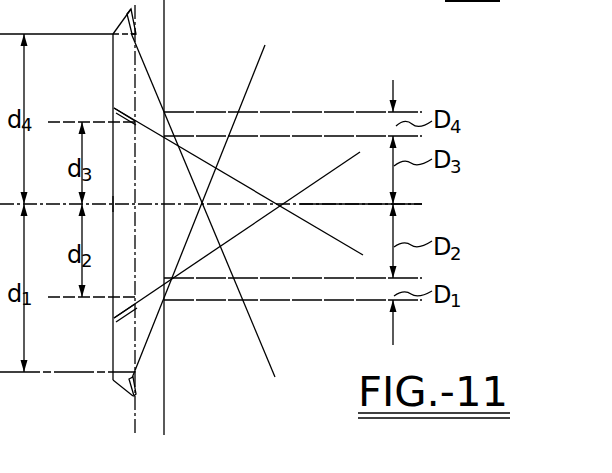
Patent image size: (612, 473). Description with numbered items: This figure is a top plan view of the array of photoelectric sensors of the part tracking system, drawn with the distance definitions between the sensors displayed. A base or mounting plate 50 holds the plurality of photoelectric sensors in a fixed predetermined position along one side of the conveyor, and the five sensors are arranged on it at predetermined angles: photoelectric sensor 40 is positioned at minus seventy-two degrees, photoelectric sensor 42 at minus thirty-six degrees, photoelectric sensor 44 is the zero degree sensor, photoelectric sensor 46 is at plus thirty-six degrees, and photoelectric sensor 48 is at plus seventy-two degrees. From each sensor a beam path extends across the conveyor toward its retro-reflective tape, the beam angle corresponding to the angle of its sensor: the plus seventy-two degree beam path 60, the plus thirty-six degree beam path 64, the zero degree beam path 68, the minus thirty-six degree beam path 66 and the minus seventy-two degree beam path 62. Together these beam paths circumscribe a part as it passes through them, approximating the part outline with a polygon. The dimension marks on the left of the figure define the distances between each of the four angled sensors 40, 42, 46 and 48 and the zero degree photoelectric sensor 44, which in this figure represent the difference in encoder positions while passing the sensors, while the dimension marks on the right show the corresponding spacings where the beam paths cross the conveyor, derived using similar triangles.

The photoelectric sensor 40 is at (130, 15).
The photoelectric sensor 42 is at (113, 108).
The photoelectric sensor 44 is at (114, 208).
The photoelectric sensor 46 is at (114, 318).
The photoelectric sensor 48 is at (130, 392).
The mounting plate 50 is at (122, 68).
The +72° beam path 60 is at (266, 54).
The −72° beam path 62 is at (265, 352).
The +36° beam path 64 is at (338, 163).
The −36° beam path 66 is at (346, 242).
The 0° beam path 68 is at (420, 204).